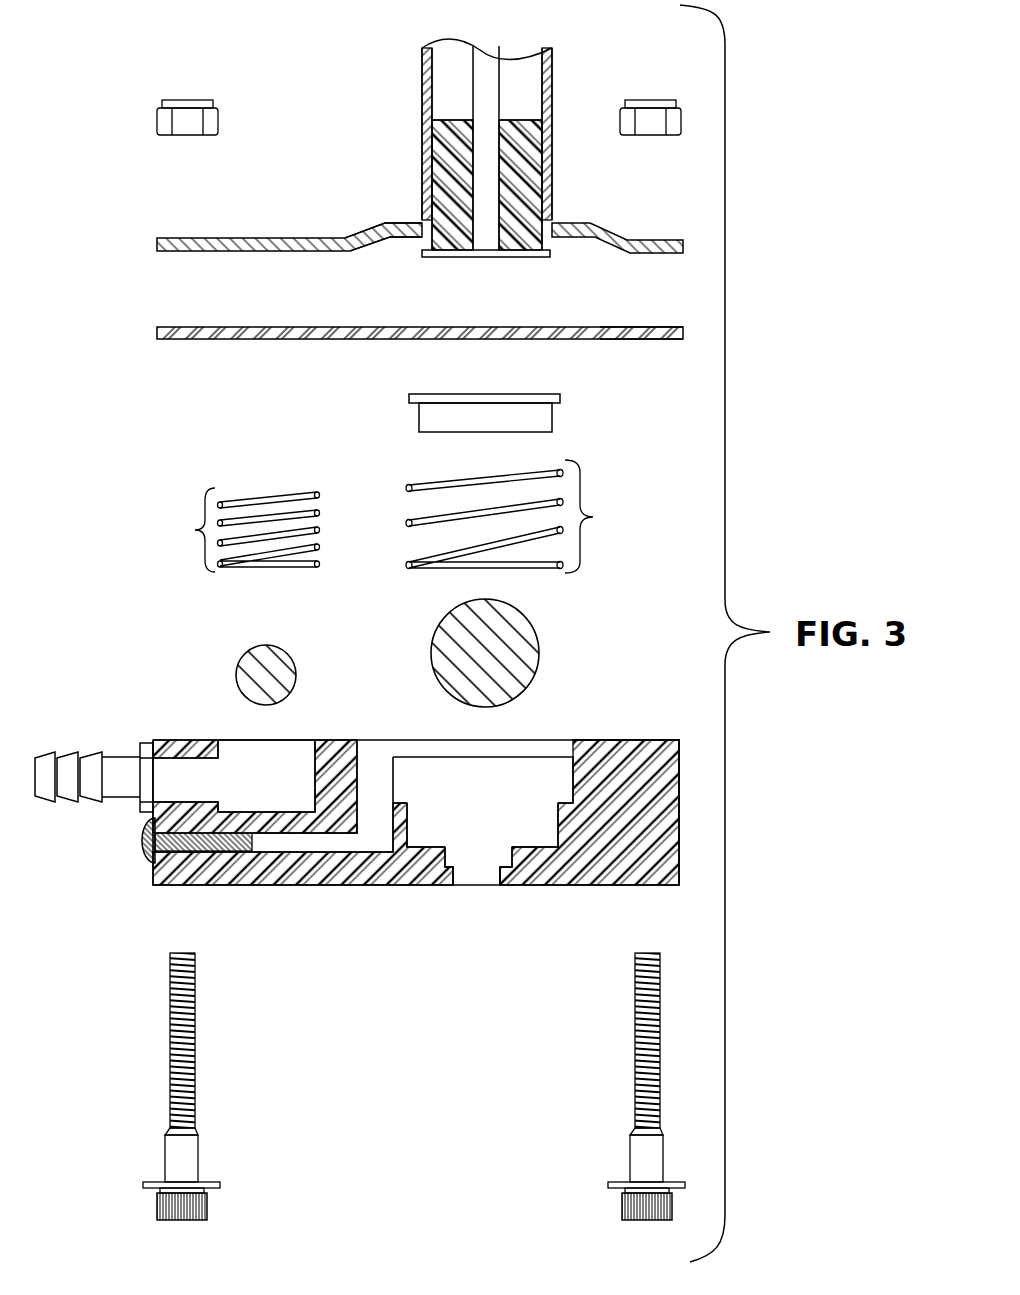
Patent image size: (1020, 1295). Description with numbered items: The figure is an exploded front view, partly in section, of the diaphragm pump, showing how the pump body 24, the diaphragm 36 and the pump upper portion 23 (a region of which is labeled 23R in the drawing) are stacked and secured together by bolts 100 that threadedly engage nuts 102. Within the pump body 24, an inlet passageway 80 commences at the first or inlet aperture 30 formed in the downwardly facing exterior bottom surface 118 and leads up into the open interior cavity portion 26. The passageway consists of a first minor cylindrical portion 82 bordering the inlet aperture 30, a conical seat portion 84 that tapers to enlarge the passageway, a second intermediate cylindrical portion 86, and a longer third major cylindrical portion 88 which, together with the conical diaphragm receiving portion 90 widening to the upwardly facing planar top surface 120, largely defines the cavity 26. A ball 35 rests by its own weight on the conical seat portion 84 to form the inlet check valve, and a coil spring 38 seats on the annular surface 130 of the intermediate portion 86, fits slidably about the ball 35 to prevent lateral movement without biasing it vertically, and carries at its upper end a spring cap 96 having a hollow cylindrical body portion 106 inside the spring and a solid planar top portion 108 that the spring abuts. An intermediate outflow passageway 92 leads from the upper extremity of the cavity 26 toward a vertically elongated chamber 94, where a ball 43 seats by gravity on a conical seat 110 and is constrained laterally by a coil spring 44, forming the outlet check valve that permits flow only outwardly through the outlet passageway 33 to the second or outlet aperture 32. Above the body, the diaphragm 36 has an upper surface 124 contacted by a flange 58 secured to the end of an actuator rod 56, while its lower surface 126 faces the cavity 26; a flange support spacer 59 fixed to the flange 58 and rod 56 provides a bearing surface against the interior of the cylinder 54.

The pump upper portion 23 is at (230, 239).
The raised portion of mounting plate 23R is at (402, 223).
The pump body 24 is at (679, 872).
The open interior cavity portion 26 is at (481, 778).
The first or inlet aperture 30 is at (486, 886).
The second or outlet aperture 32 is at (133, 772).
The outlet passageway 33 is at (207, 780).
The ball 35 is at (523, 634).
The diaphragm 36 is at (150, 330).
The coil spring 38 is at (600, 517).
The ball 43 is at (268, 663).
The coil spring 44 is at (195, 530).
The cylinder 54 is at (552, 62).
The actuator rod 56 is at (487, 66).
The flange 58 is at (527, 259).
The flange support spacer 59 is at (518, 179).
The inlet passageway 80 is at (474, 878).
The first minor cylindrical portion 82 is at (437, 845).
The conical seat portion 84 is at (510, 870).
The second intermediate cylindrical portion 86 is at (408, 820).
The third major cylindrical portion 88 is at (558, 822).
The conical diaphragm receiving portion 90 is at (600, 743).
The intermediate outflow passageway 92 is at (333, 845).
The chamber 94 is at (300, 758).
The spring cap 96 is at (476, 424).
The bolts 100 is at (198, 1160).
The nuts 102 is at (189, 100).
The hollow cylindrical body portion 106 is at (419, 425).
The solid planar top portion 108 is at (409, 398).
The conical seat 110 is at (277, 822).
The downwardly facing exterior bottom surface 118 is at (212, 887).
The upwardly facing planar top surface 120 is at (210, 780).
The upper surface 124 is at (648, 327).
The lower surface 126 is at (638, 345).
The annular surface 130 is at (445, 858).